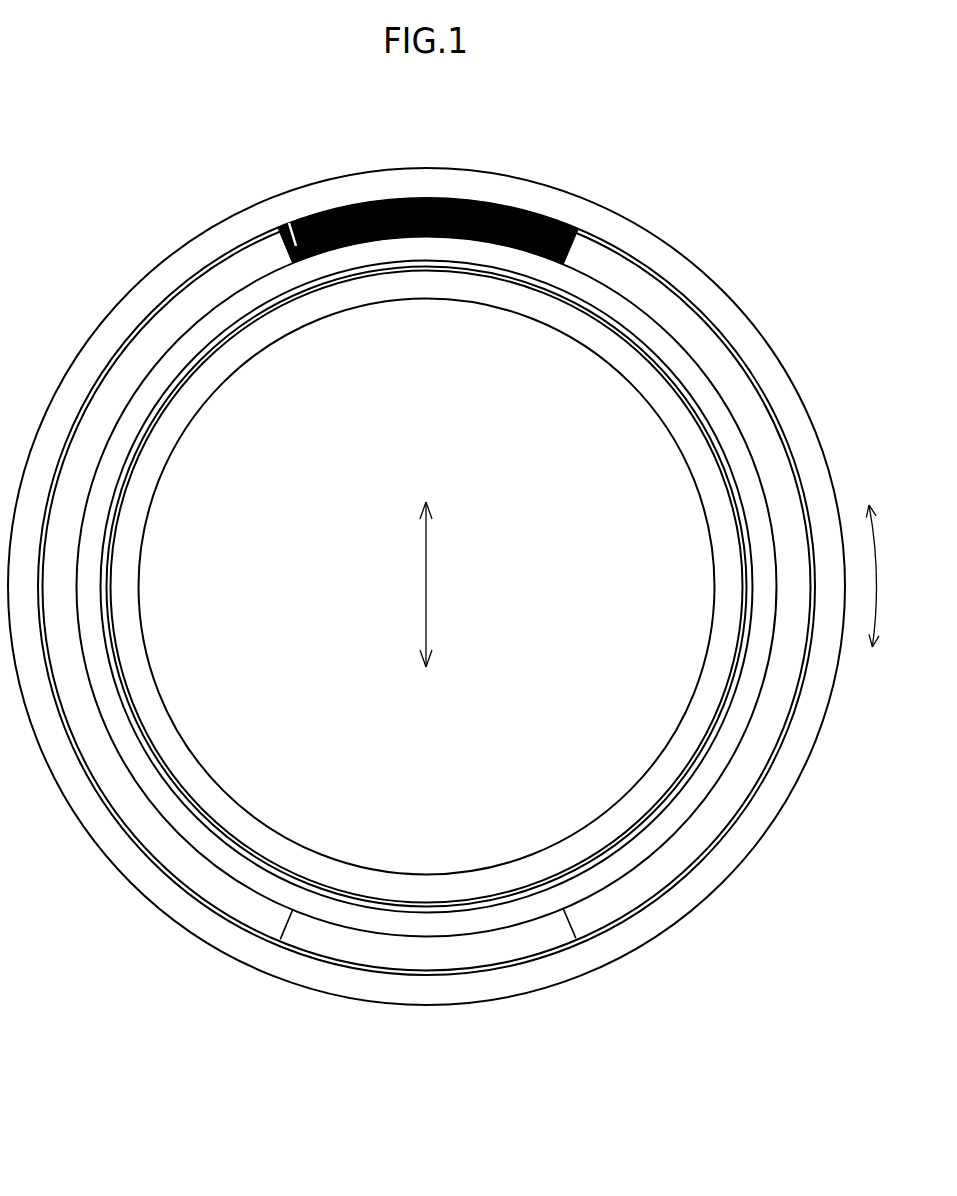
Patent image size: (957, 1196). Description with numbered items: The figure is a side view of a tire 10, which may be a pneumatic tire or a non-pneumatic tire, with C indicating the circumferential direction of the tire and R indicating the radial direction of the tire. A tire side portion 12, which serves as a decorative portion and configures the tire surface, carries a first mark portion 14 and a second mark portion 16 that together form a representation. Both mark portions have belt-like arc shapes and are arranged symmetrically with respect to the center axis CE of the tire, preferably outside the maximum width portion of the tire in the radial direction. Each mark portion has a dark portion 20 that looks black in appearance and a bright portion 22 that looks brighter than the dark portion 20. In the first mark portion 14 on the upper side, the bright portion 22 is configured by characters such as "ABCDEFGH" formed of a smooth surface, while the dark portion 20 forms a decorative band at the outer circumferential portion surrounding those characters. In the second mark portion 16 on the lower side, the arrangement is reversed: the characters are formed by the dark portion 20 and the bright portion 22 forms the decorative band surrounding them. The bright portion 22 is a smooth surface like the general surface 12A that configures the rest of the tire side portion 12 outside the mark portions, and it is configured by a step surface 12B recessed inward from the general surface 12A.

The tire 10 is at (683, 195).
The tire side portion 12 is at (750, 358).
The general surface 12A is at (708, 817).
The step surface 12B is at (562, 243).
The first mark portion 14 is at (519, 199).
The second mark portion 16 is at (550, 958).
The dark portion 20 is at (288, 225).
The bright portion 22 is at (380, 210).
The circumferential direction of the tire C is at (877, 572).
The radial direction of the tire R is at (426, 565).
The center axis of the tire CE is at (426, 585).